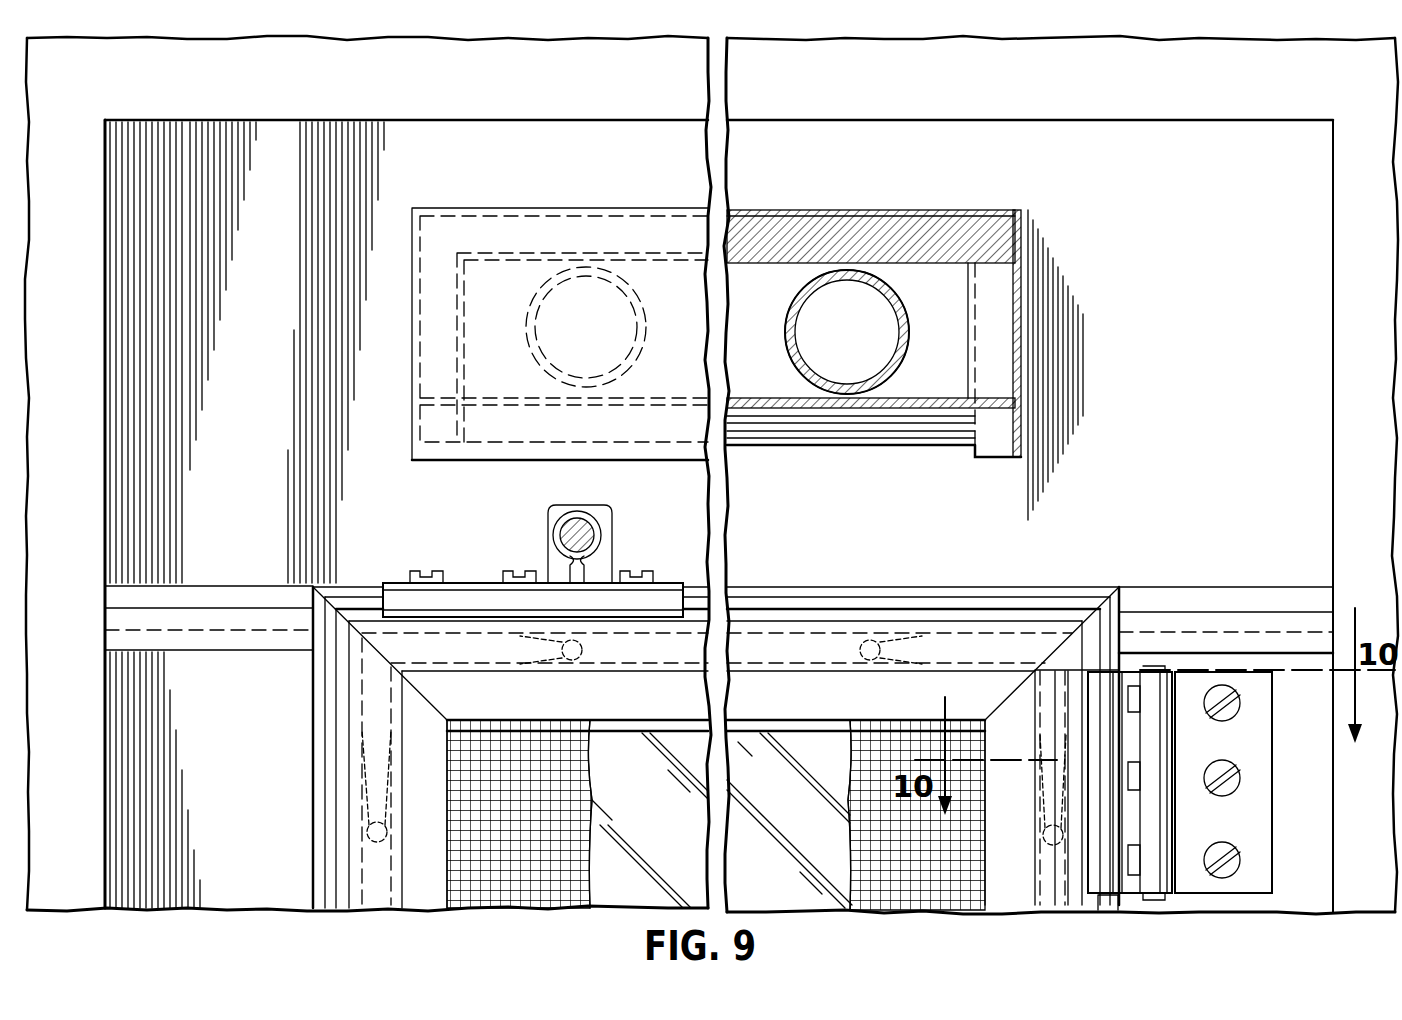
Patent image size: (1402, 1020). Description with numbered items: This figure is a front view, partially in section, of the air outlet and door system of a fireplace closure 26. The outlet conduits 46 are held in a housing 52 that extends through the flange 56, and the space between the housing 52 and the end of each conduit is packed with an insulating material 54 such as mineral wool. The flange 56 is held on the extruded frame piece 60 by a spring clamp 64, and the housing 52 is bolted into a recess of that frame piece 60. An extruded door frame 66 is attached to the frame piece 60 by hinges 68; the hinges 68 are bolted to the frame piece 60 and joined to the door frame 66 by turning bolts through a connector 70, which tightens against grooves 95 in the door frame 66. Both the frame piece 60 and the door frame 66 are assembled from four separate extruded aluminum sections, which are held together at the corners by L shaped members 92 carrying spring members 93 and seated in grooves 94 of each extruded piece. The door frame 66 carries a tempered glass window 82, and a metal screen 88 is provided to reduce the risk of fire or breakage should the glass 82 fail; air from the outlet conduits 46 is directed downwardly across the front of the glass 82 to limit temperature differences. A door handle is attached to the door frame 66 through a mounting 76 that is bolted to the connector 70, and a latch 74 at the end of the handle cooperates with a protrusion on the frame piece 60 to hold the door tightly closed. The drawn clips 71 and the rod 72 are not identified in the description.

The closure 26 is at (300, 786).
The outlet conduit 46 is at (535, 360).
The housing 52 is at (633, 205).
The insulating material 54 is at (912, 236).
The flange 56 is at (188, 873).
The extruded frame piece 60 is at (942, 580).
The spring clamp 64 is at (1202, 576).
The extruded door frame 66 is at (791, 625).
The hinge 68 is at (1252, 882).
The connector 70 is at (403, 598).
The clips 71 is at (440, 580).
The rod 72 is at (596, 535).
The latch 74 is at (596, 508).
The mounting 76 is at (553, 523).
The tempered glass window 82 is at (785, 888).
The metal screen 88 is at (515, 892).
The L shaped member 92 is at (997, 640).
The spring member 93 is at (366, 838).
The groove 94 is at (658, 652).
The groove 95 is at (878, 612).